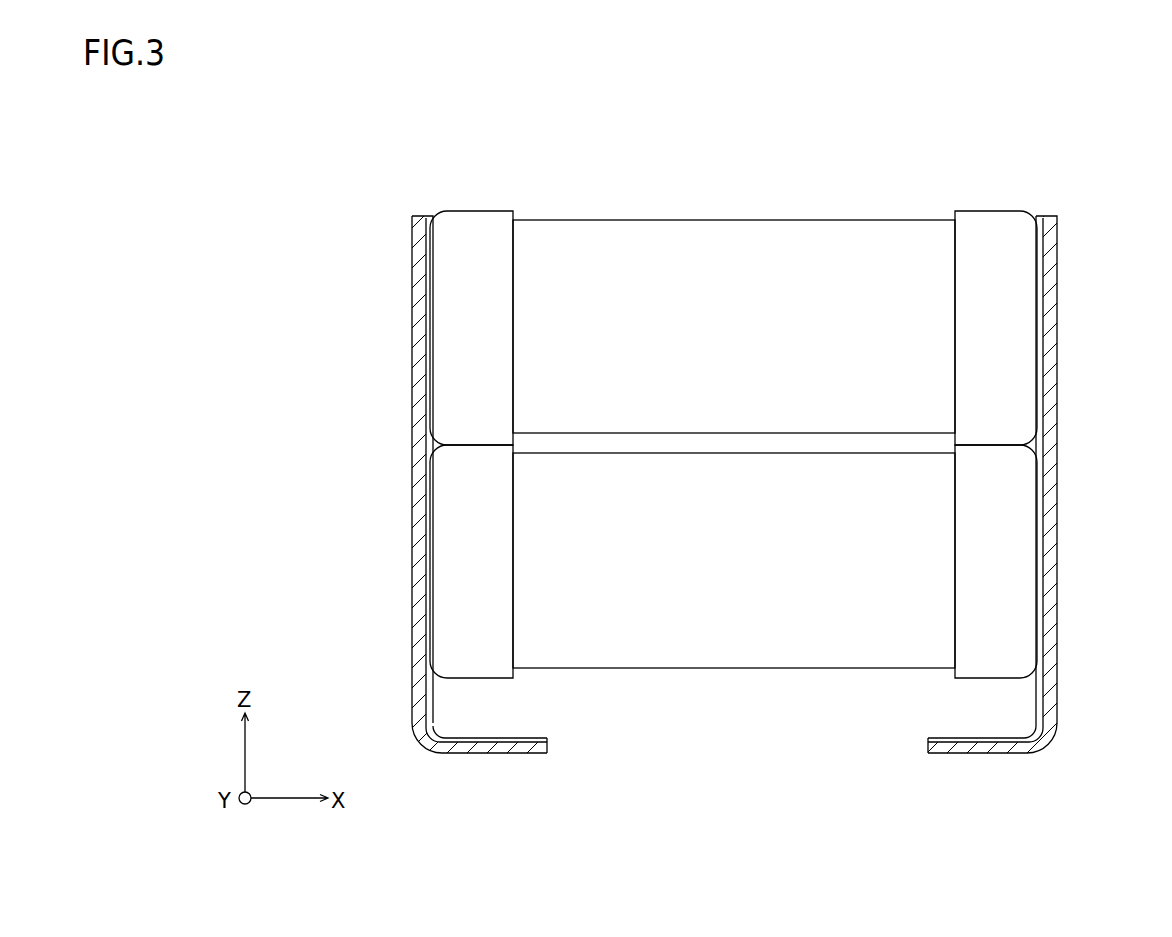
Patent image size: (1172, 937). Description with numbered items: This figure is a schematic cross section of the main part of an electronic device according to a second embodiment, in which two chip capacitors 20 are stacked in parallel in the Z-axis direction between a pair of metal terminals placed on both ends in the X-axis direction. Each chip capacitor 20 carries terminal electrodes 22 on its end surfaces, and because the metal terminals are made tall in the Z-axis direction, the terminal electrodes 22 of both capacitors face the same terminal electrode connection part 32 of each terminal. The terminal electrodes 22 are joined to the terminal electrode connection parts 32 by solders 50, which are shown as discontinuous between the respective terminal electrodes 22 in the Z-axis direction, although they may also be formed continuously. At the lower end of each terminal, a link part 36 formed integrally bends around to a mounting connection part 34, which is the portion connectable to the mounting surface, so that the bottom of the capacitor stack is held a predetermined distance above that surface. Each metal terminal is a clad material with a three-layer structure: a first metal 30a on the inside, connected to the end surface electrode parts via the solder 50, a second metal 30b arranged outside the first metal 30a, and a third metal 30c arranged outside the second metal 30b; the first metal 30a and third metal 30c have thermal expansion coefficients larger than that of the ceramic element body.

The chip capacitor 20 is at (725, 248).
The terminal electrode 22 is at (463, 329).
The terminal electrode connection part 32 is at (420, 493).
The mounting connection part 34 is at (735, 751).
The link part 36 is at (415, 706).
The first metal 30a is at (547, 744).
The second metal 30b is at (470, 755).
The third metal 30c is at (515, 753).
The solder 50 is at (428, 268).